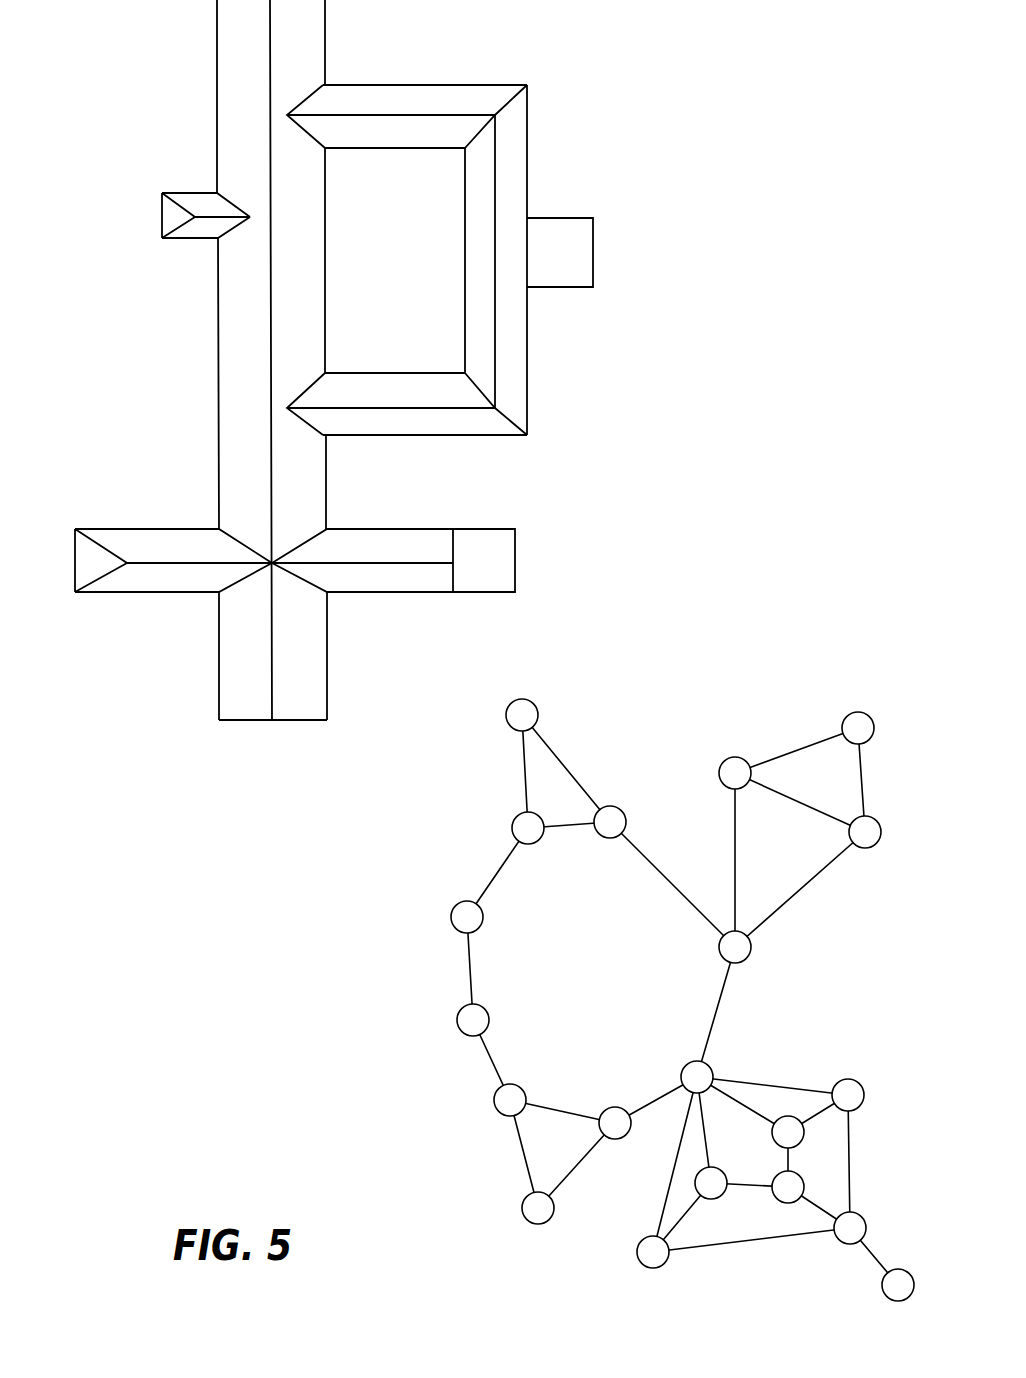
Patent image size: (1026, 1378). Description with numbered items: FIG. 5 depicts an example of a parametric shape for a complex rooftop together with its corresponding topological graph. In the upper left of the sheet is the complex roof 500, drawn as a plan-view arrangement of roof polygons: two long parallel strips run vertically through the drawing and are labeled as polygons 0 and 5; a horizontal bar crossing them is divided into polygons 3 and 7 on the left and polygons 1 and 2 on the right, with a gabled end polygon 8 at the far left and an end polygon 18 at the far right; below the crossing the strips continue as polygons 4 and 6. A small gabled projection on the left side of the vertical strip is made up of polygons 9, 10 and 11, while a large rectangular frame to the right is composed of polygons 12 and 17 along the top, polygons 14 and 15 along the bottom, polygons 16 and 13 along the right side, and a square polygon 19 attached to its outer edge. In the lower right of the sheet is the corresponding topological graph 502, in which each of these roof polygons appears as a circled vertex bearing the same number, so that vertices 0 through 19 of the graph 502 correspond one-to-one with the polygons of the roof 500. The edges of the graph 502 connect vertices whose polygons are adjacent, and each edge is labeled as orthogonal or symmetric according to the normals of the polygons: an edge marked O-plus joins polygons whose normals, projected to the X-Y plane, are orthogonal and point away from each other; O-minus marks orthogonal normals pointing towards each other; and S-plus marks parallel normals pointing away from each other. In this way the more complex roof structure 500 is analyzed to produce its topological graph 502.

The complex roof 500 is at (618, 165).
The topological graph 502 is at (705, 707).
The region 0 is at (233, 360).
The region 1 is at (362, 545).
The region 2 is at (362, 576).
The region 3 is at (264, 546).
The region 4 is at (273, 678).
The region 5 is at (298, 360).
The region 6 is at (308, 656).
The region 7 is at (173, 577).
The region 8 is at (101, 560).
The region 9 is at (196, 229).
The region 10 is at (162, 214).
The region 11 is at (190, 200).
The region 12 is at (407, 116).
The region 13 is at (511, 260).
The region 14 is at (407, 404).
The region 15 is at (407, 422).
The region 16 is at (409, 260).
The region 17 is at (391, 131).
The region 18 is at (484, 560).
The region 19 is at (560, 252).